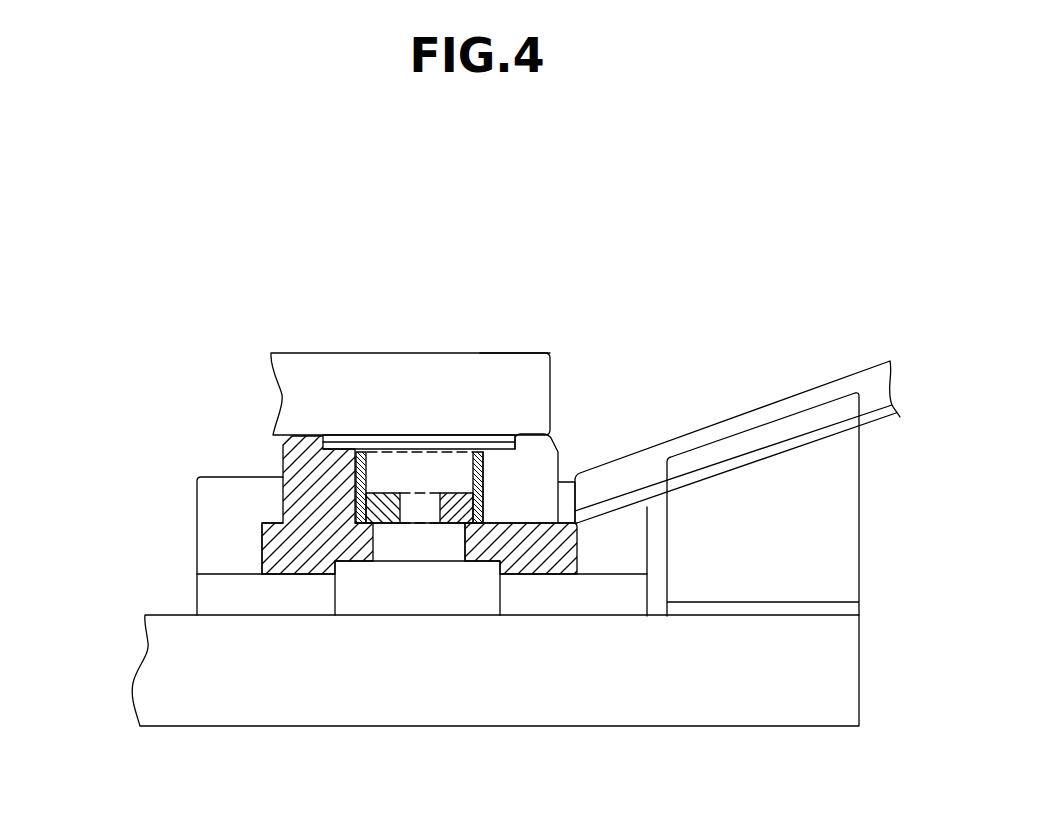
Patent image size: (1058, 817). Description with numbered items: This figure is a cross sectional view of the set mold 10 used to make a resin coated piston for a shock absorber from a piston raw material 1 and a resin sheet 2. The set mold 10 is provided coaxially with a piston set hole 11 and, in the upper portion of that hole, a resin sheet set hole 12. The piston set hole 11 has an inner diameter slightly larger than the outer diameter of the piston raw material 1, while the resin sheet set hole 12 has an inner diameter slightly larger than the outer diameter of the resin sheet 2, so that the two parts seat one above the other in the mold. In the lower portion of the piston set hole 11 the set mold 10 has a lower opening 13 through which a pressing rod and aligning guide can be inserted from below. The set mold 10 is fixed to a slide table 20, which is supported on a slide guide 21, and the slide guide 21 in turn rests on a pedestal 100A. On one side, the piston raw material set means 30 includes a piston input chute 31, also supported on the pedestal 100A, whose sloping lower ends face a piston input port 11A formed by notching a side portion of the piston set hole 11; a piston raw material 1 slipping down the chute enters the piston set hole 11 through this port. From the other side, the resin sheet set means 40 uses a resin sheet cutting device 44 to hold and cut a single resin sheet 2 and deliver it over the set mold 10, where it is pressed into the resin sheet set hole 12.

The piston raw material 1 is at (460, 508).
The resin sheet 2 is at (443, 443).
The set mold 10 is at (283, 458).
The piston set hole 11 is at (385, 522).
The piston input port 11A is at (535, 465).
The resin sheet set hole 12 is at (333, 437).
The lower opening 13 is at (465, 538).
The slide table 20 is at (268, 543).
The slide guide 21 is at (197, 500).
The piston raw material set means 30 is at (861, 366).
The piston input chute 31 is at (783, 396).
The resin sheet set means 40 is at (378, 353).
The resin sheet cutting device 44 is at (490, 352).
The pedestal 100A is at (170, 675).